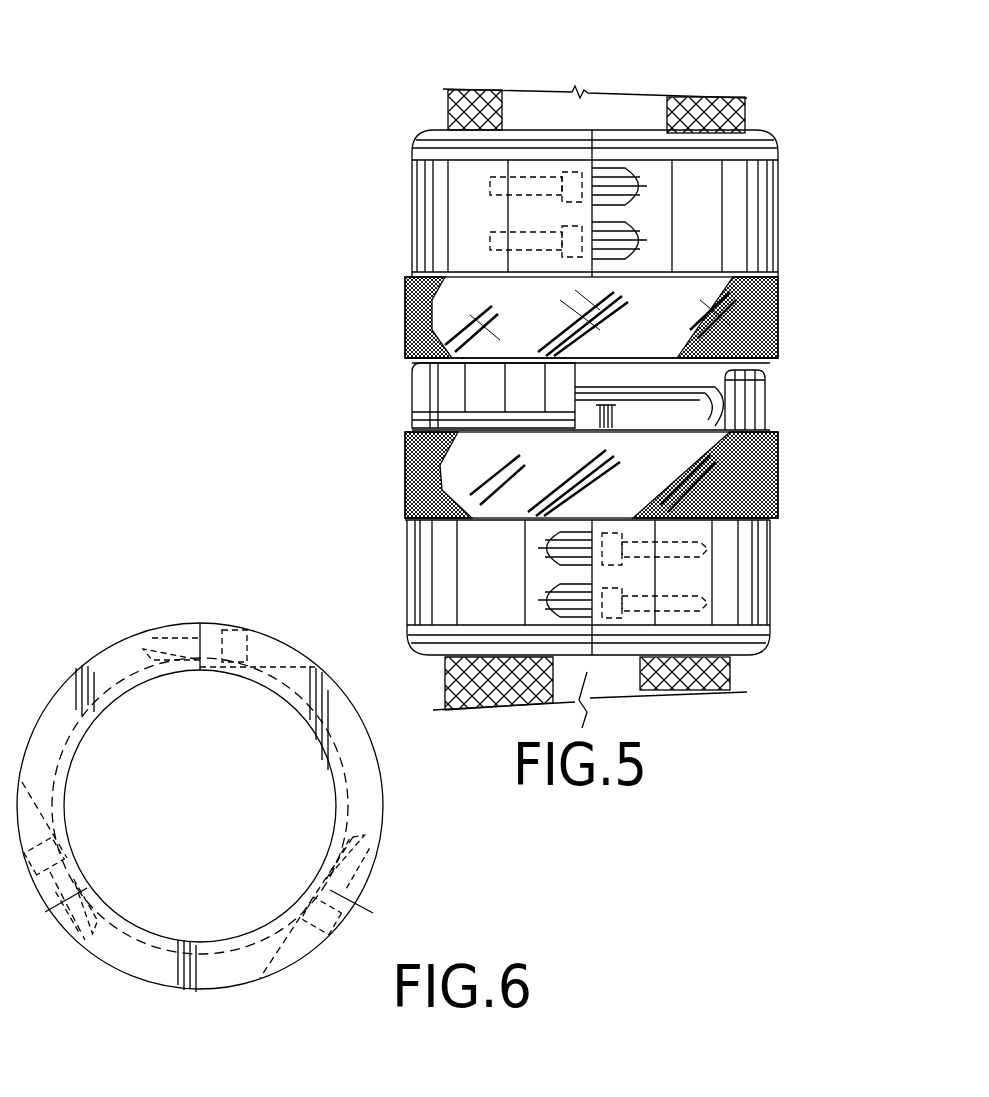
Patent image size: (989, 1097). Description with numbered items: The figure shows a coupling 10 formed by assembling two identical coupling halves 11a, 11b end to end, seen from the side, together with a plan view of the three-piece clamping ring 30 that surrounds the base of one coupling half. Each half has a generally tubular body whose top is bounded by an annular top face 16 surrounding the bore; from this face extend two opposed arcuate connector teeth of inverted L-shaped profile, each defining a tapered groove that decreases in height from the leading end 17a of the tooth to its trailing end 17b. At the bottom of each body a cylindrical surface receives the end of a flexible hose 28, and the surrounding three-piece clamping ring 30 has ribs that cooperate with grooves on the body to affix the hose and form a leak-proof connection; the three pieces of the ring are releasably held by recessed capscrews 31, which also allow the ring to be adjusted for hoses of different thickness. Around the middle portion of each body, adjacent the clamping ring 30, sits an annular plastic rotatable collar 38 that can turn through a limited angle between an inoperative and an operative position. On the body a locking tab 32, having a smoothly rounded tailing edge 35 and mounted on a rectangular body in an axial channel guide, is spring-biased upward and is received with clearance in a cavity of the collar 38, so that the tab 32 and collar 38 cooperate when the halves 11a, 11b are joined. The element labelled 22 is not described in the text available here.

In FIG. 5, the coupling 10 is at (822, 408).
In FIG. 5, the coupling half 11a is at (786, 258).
In FIG. 5, the coupling half 11b is at (790, 568).
In FIG. 5, the annular top face 16 is at (545, 348).
In FIG. 5, the leading end 17a is at (548, 380).
In FIG. 5, the trailing end 17b is at (760, 392).
In FIG. 5, the retaining pin 22 is at (765, 418).
In FIG. 5, the flexible hose 28 is at (636, 114).
In FIG. 5, the clamping ring 30 is at (750, 183).
In FIG. 6, the clamping ring 30 is at (54, 686).
In FIG. 5, the recessed capscrews 31 is at (572, 178).
In FIG. 6, the recessed capscrews 31 is at (240, 648).
In FIG. 5, the locking tab 32 is at (590, 414).
In FIG. 5, the tailing edge 35 is at (425, 416).
In FIG. 5, the rotatable collar 38 is at (786, 316).